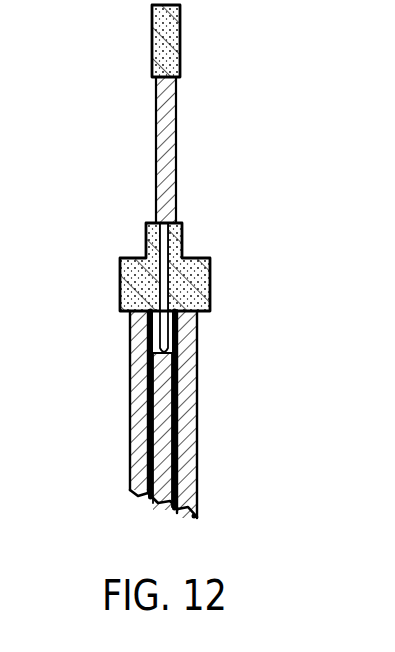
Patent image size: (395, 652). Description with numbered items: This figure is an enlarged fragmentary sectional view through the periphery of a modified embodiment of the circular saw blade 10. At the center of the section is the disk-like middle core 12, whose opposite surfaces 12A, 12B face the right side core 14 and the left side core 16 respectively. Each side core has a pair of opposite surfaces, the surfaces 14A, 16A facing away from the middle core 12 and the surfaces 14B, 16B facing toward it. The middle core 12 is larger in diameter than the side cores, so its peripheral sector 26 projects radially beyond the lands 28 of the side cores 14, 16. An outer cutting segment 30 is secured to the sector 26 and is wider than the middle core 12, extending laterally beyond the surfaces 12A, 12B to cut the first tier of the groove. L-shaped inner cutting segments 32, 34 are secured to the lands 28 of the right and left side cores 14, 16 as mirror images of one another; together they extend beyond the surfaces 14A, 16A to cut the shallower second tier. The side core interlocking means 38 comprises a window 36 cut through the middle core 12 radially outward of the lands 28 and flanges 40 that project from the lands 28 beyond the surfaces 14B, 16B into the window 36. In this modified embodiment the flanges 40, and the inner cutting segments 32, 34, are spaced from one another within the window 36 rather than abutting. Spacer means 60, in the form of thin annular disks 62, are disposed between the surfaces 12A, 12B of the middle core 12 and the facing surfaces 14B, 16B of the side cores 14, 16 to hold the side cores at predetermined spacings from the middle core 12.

The circular saw blade 10 is at (211, 83).
The middle core 12 is at (176, 222).
The opposite surface of middle core 12A is at (177, 131).
The opposite surface of middle core 12B is at (156, 135).
The right side core 14 is at (230, 435).
The opposite surface of right side core 14A is at (195, 461).
The opposite surface of right side core 14B is at (195, 381).
The left side core 16 is at (124, 430).
The opposite surface of left side core 16A is at (130, 428).
The opposite surface of left side core 16B is at (150, 388).
The sector 26 is at (177, 86).
The land 28 is at (169, 262).
The outer cutting segment 30 is at (152, 45).
The inner cutting segment 32 is at (208, 283).
The inner cutting segment 34 is at (120, 274).
The window 36 is at (146, 242).
The side core interlocking means 38 is at (222, 312).
The flange 40 is at (163, 329).
The spacer means 60 is at (132, 512).
The thin annular disk 62 is at (150, 474).